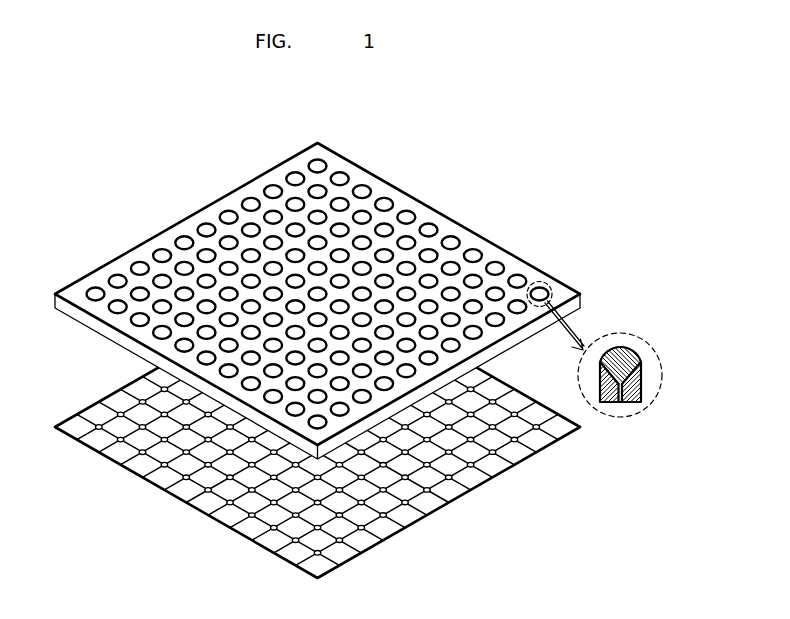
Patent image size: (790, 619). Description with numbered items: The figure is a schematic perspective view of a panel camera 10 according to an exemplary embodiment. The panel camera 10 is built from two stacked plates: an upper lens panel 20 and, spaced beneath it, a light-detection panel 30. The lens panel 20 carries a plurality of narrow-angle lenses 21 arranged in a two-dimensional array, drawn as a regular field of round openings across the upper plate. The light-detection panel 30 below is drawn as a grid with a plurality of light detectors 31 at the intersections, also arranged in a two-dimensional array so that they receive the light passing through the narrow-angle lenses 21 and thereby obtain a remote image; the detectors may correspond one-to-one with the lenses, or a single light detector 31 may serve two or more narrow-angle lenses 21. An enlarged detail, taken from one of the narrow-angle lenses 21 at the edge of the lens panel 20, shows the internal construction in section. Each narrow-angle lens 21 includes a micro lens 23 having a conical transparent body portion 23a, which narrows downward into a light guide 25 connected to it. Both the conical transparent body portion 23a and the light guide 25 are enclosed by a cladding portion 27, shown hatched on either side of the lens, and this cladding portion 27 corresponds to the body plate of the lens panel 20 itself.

The panel camera 10 is at (524, 180).
The lens panel 20 is at (152, 214).
The narrow-angle lens 21 is at (385, 197).
The micro lens 23 is at (632, 350).
The conical transparent body portion 23a is at (638, 369).
The light guide 25 is at (641, 395).
The cladding portion 27 is at (601, 387).
The light-detection panel 30 is at (84, 385).
The light detector 31 is at (387, 519).